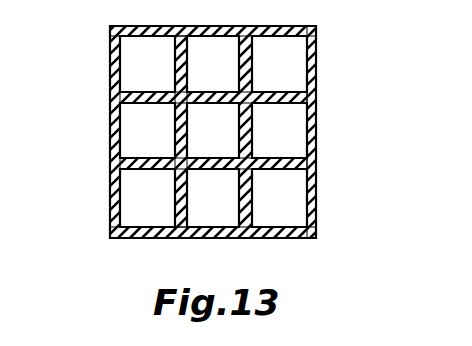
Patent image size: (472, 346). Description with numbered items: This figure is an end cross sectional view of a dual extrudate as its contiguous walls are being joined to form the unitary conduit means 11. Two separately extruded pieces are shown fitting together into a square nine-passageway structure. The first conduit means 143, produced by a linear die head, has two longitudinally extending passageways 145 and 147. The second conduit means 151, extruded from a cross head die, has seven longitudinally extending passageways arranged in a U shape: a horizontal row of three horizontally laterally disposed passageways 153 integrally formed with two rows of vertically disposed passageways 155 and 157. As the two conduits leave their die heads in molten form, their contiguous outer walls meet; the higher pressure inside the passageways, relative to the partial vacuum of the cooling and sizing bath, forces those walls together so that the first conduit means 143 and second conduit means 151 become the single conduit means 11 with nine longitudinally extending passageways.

The conduit means 11 is at (93, 43).
The second conduit means 151 is at (237, 27).
The horizontally laterally disposed passageways 153 is at (282, 92).
The vertically disposed passageways 157 is at (310, 141).
The longitudinally extending passageway 145 is at (213, 151).
The vertically disposed passageways 155 is at (152, 159).
The longitudinally extending passageway 147 is at (184, 199).
The first conduit means 143 is at (184, 199).